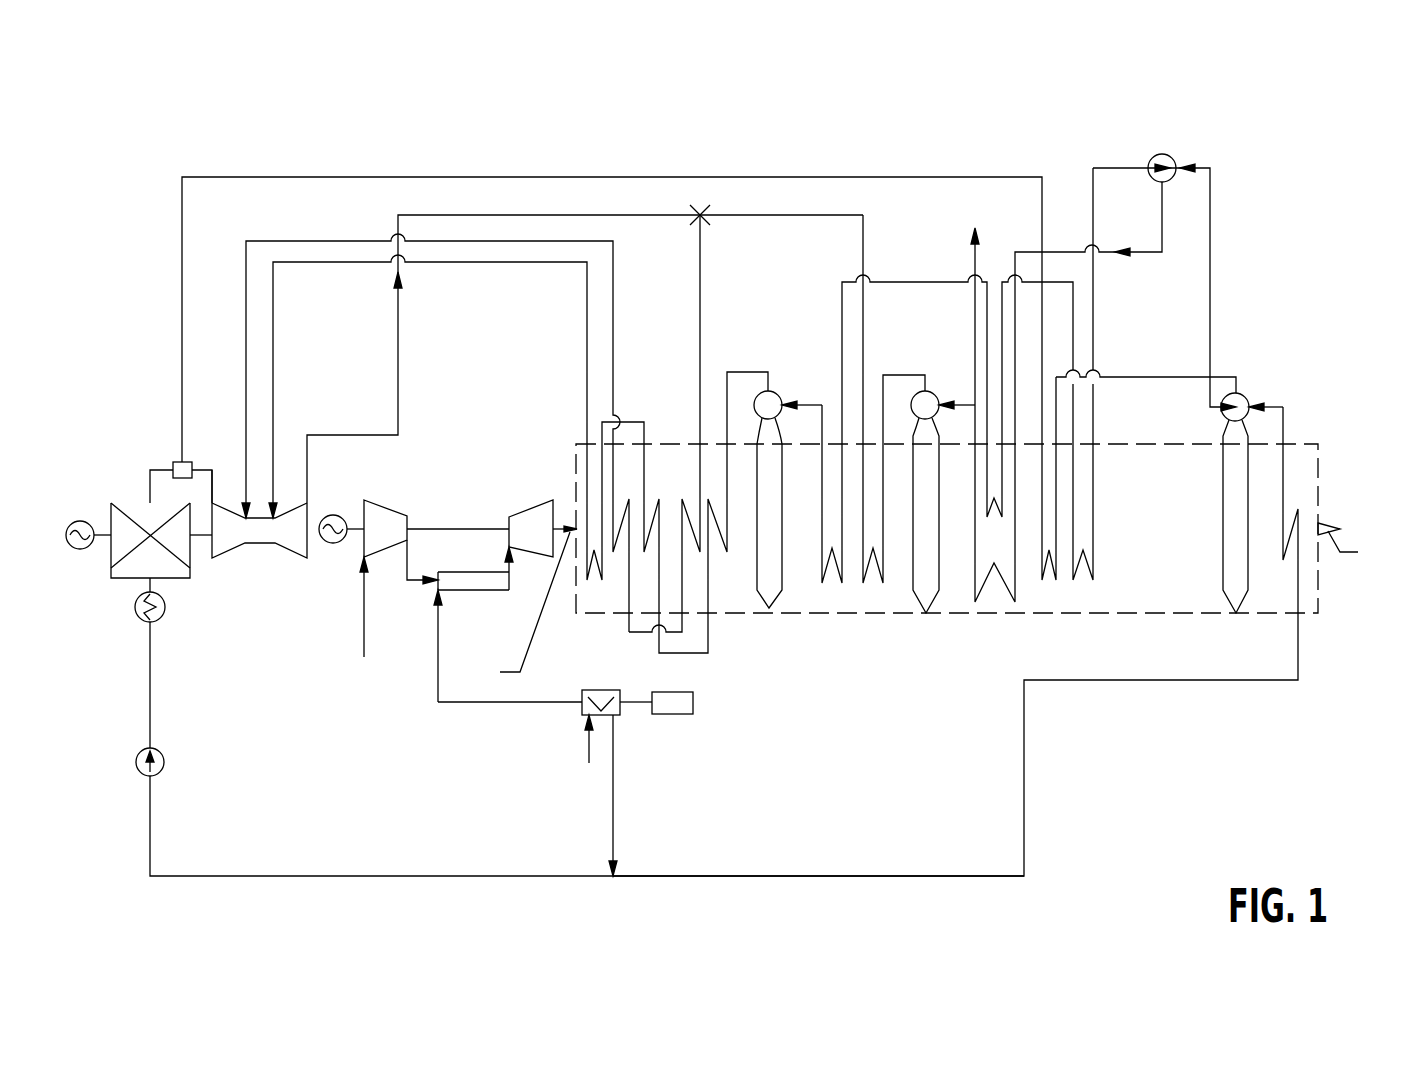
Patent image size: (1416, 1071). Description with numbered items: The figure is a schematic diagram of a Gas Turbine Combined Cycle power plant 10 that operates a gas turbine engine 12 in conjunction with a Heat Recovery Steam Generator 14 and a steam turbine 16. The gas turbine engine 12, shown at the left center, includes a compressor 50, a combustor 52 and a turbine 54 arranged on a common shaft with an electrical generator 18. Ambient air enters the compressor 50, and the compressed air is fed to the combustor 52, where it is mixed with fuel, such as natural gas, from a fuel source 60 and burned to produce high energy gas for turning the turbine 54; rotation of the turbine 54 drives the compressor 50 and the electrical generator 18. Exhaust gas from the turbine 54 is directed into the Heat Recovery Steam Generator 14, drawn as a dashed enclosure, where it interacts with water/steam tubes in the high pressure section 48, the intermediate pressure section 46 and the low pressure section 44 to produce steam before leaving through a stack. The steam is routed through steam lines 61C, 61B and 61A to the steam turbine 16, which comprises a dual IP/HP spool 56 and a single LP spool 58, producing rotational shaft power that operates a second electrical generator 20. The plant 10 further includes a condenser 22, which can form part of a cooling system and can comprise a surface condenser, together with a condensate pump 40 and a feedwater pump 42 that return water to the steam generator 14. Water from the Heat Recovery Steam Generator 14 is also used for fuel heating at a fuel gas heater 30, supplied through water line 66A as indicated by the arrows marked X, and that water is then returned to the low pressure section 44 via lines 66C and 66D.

The Gas Turbine Combined Cycle power plant 10 is at (1336, 120).
The gas turbine engine 12 is at (448, 558).
The Heat Recovery Steam Generator 14 is at (956, 454).
The steam turbine 16 is at (447, 481).
The electrical generator 18 is at (333, 515).
The electrical generator 20 is at (70, 548).
The condenser 22 is at (165, 616).
The fuel gas heater 30 is at (600, 690).
The condensate pump 40 is at (136, 762).
The feedwater pump 42 is at (1162, 154).
The low pressure section 44 is at (1258, 368).
The intermediate pressure section 46 is at (938, 352).
The high pressure section 48 is at (782, 350).
The compressor 50 is at (388, 503).
The combustor 52 is at (473, 594).
The turbine 54 is at (532, 503).
The IP/HP spool 56 is at (258, 549).
The LP spool 58 is at (110, 521).
The fuel source 60 is at (693, 702).
The steam line 61A is at (612, 177).
The steam line 61B is at (246, 378).
The steam line 61C is at (275, 382).
The water line 66A is at (975, 265).
The line 66C is at (613, 832).
The line 66D is at (797, 876).